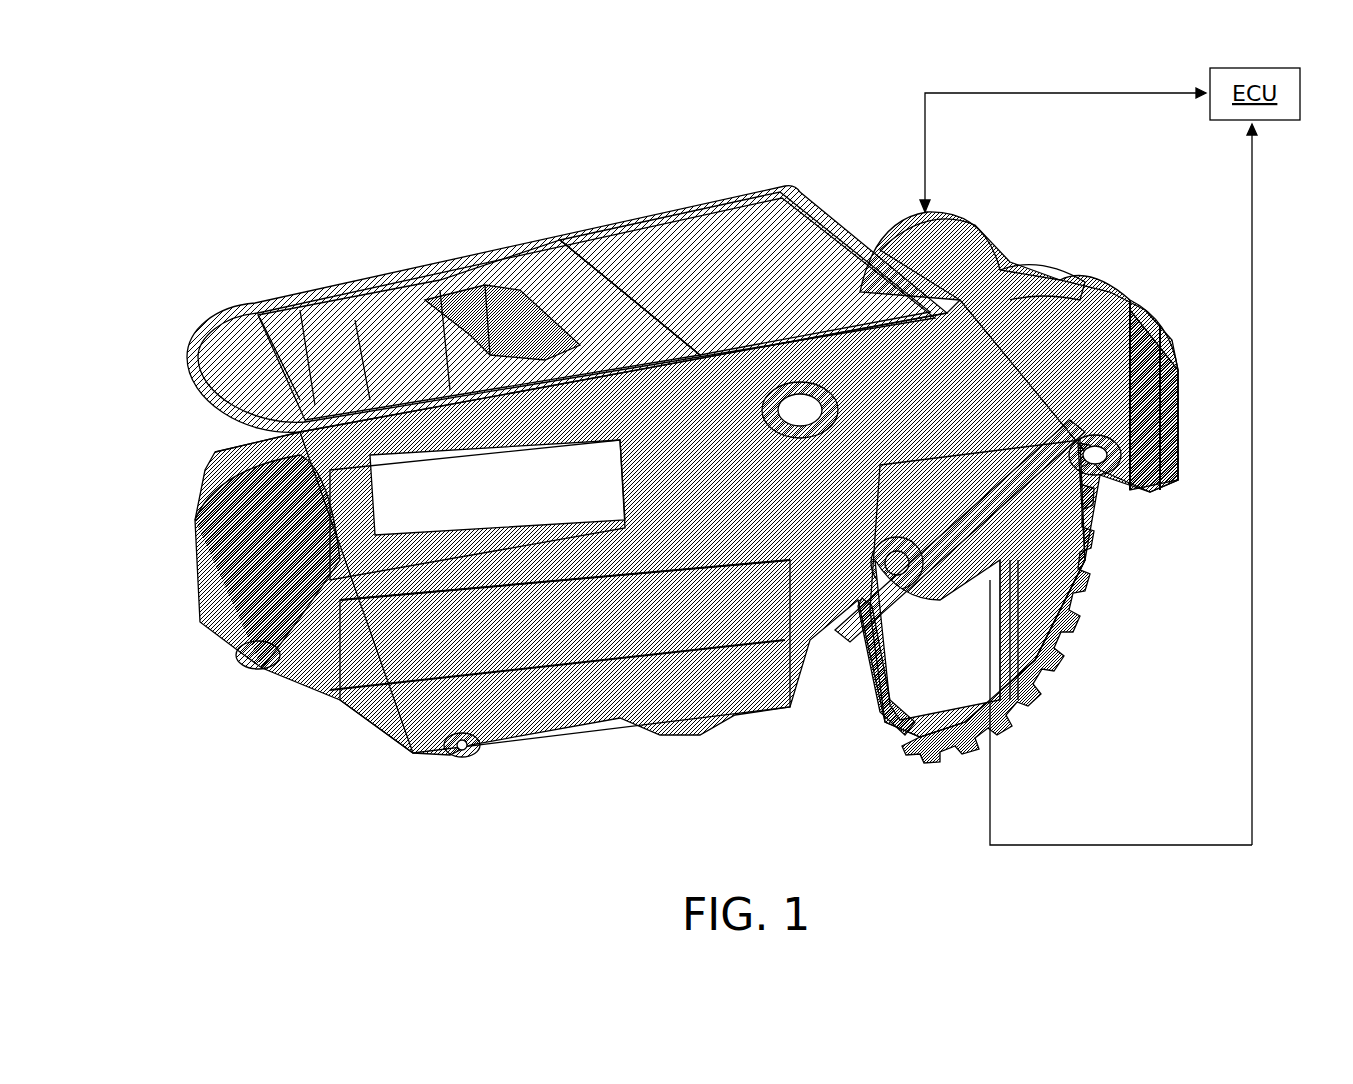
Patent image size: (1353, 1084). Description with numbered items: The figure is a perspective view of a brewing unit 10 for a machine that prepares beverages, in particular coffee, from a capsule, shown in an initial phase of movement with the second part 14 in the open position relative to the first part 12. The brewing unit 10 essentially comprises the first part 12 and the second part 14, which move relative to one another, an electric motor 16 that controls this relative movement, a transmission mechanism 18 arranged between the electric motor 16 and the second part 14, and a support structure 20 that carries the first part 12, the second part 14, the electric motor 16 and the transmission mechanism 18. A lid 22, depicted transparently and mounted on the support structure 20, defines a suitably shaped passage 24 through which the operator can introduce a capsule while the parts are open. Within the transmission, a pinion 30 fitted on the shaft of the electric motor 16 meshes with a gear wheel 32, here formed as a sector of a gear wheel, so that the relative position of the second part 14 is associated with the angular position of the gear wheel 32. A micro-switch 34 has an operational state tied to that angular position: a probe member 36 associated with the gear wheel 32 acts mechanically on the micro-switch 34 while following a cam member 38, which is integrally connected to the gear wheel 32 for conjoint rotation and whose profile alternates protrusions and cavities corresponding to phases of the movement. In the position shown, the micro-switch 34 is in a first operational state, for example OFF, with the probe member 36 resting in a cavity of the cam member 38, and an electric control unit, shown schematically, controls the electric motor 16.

The brewing unit 10 is at (320, 725).
The first part 12 is at (640, 300).
The second part 14 is at (415, 335).
The electric motor 16 is at (940, 255).
The transmission mechanism 18 is at (1090, 658).
The support structure 20 is at (465, 758).
The lid 22 is at (185, 358).
The passage 24 is at (495, 292).
The pinion 30 is at (1115, 500).
The gear wheel 32 is at (1040, 640).
The micro-switch 34 is at (1022, 640).
The probe member 36 is at (1090, 600).
The cam member 38 is at (865, 700).